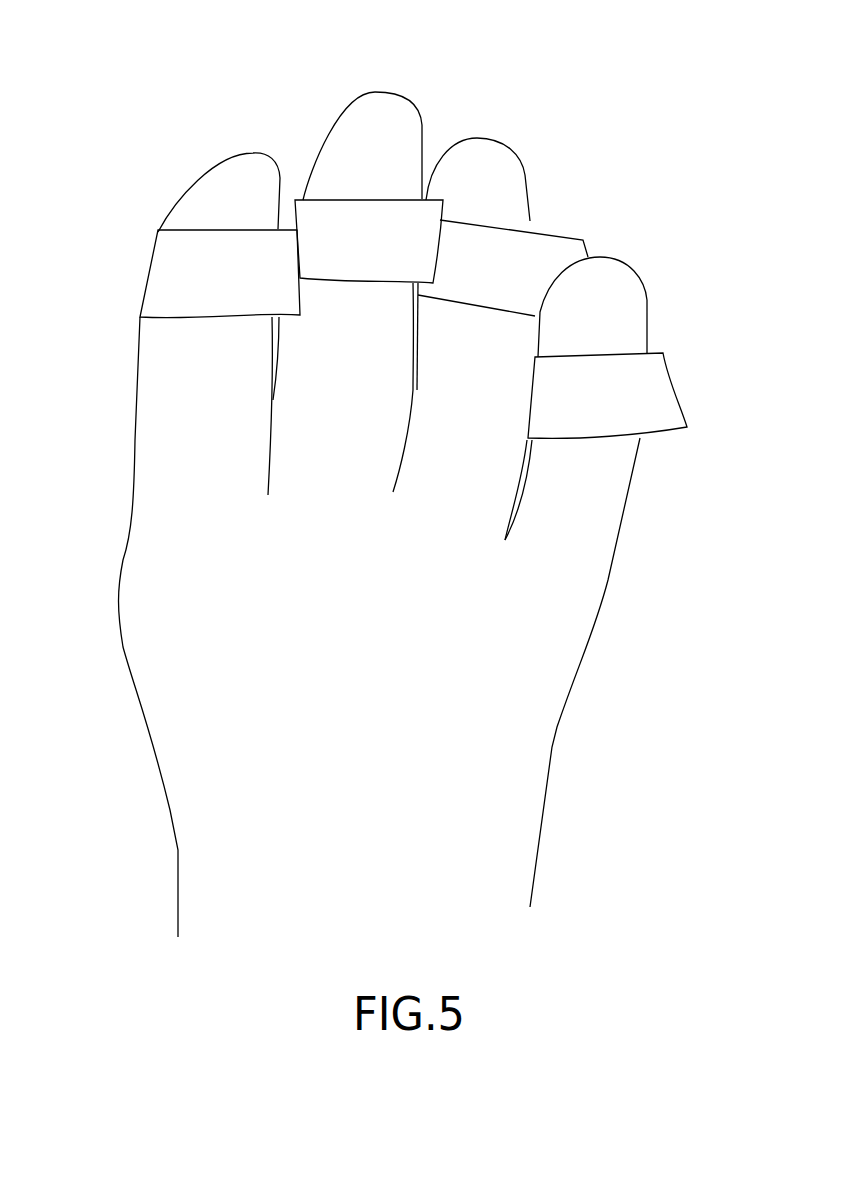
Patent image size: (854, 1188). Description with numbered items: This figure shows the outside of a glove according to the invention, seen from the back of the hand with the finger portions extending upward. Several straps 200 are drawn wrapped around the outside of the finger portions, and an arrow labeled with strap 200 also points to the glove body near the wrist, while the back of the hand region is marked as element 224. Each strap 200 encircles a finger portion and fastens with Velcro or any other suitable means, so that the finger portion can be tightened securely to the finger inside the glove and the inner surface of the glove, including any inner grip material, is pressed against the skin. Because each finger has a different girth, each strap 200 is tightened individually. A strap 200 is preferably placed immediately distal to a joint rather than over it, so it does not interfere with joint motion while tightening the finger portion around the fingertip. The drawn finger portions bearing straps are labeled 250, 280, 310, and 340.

The strap 200 is at (165, 260).
The hand body portion 224 is at (333, 582).
The first finger portion 250 is at (237, 172).
The second finger portion 280 is at (388, 108).
The third finger portion 310 is at (483, 162).
The fourth finger portion 340 is at (603, 293).